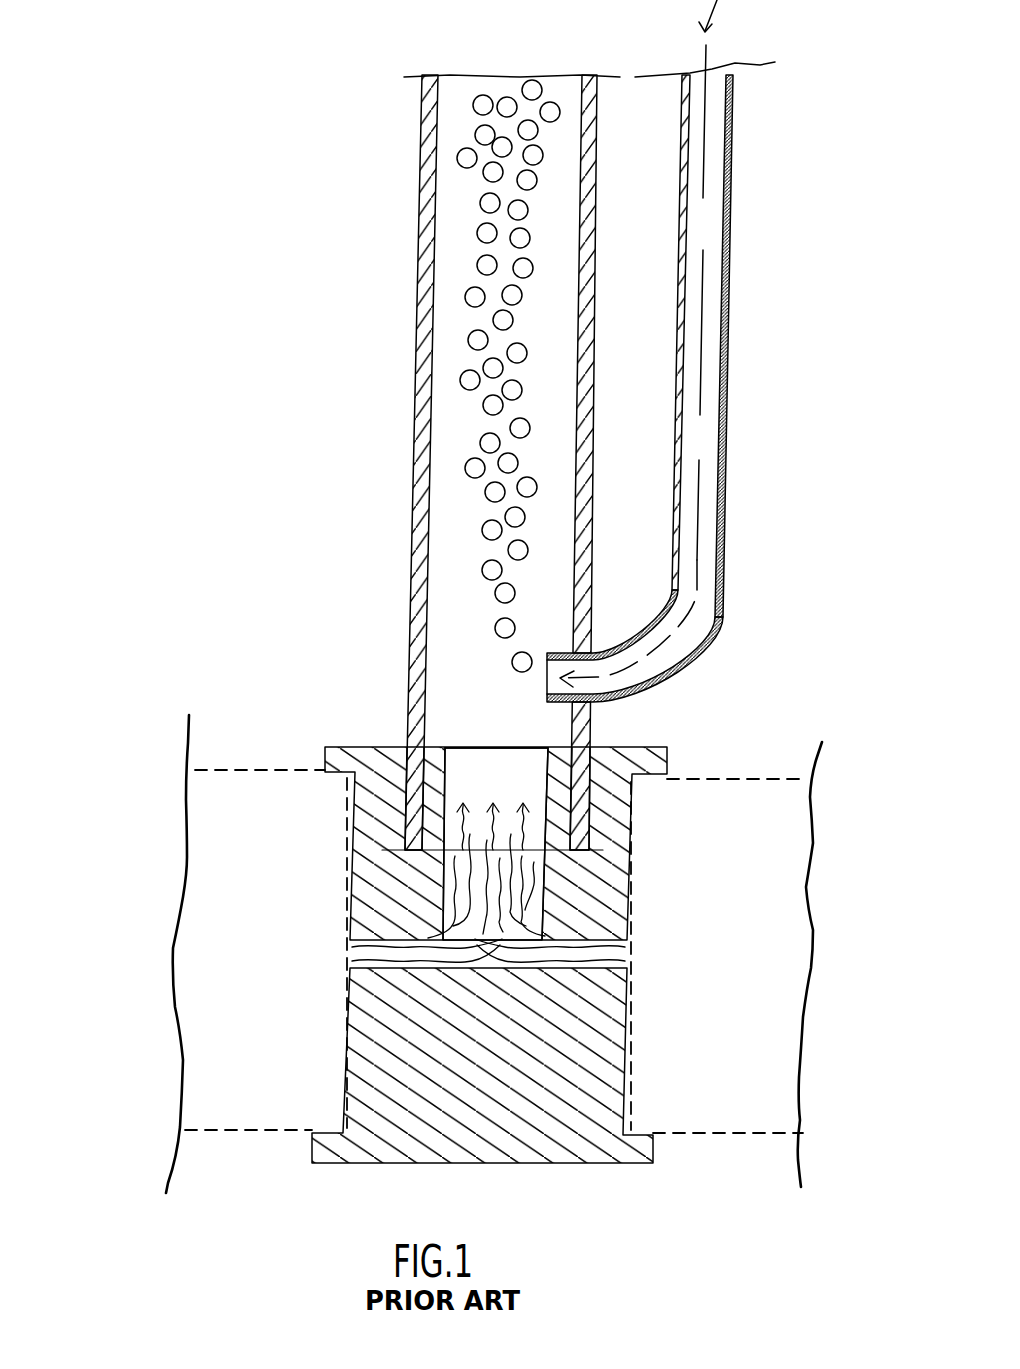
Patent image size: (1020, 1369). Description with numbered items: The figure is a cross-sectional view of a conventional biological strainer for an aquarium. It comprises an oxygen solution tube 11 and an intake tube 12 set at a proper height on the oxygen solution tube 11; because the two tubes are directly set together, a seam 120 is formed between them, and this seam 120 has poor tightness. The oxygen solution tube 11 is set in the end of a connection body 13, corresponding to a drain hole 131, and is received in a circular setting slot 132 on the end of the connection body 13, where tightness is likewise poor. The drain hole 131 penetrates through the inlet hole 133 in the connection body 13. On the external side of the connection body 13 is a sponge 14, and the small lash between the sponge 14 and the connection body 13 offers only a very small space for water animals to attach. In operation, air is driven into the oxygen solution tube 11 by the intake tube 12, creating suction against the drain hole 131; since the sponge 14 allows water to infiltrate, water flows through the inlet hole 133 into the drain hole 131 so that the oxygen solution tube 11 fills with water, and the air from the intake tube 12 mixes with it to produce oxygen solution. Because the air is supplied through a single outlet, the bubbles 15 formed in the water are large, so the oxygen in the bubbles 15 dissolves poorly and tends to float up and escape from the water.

The oxygen solution tube 11 is at (420, 247).
The intake tube 12 is at (707, 238).
The seam 120 is at (592, 703).
The connection body 13 is at (667, 762).
The drain hole 131 is at (507, 760).
The circular setting slot 132 is at (405, 748).
The inlet hole 133 is at (630, 953).
The sponge 14 is at (236, 894).
The bubbles 15 is at (472, 466).